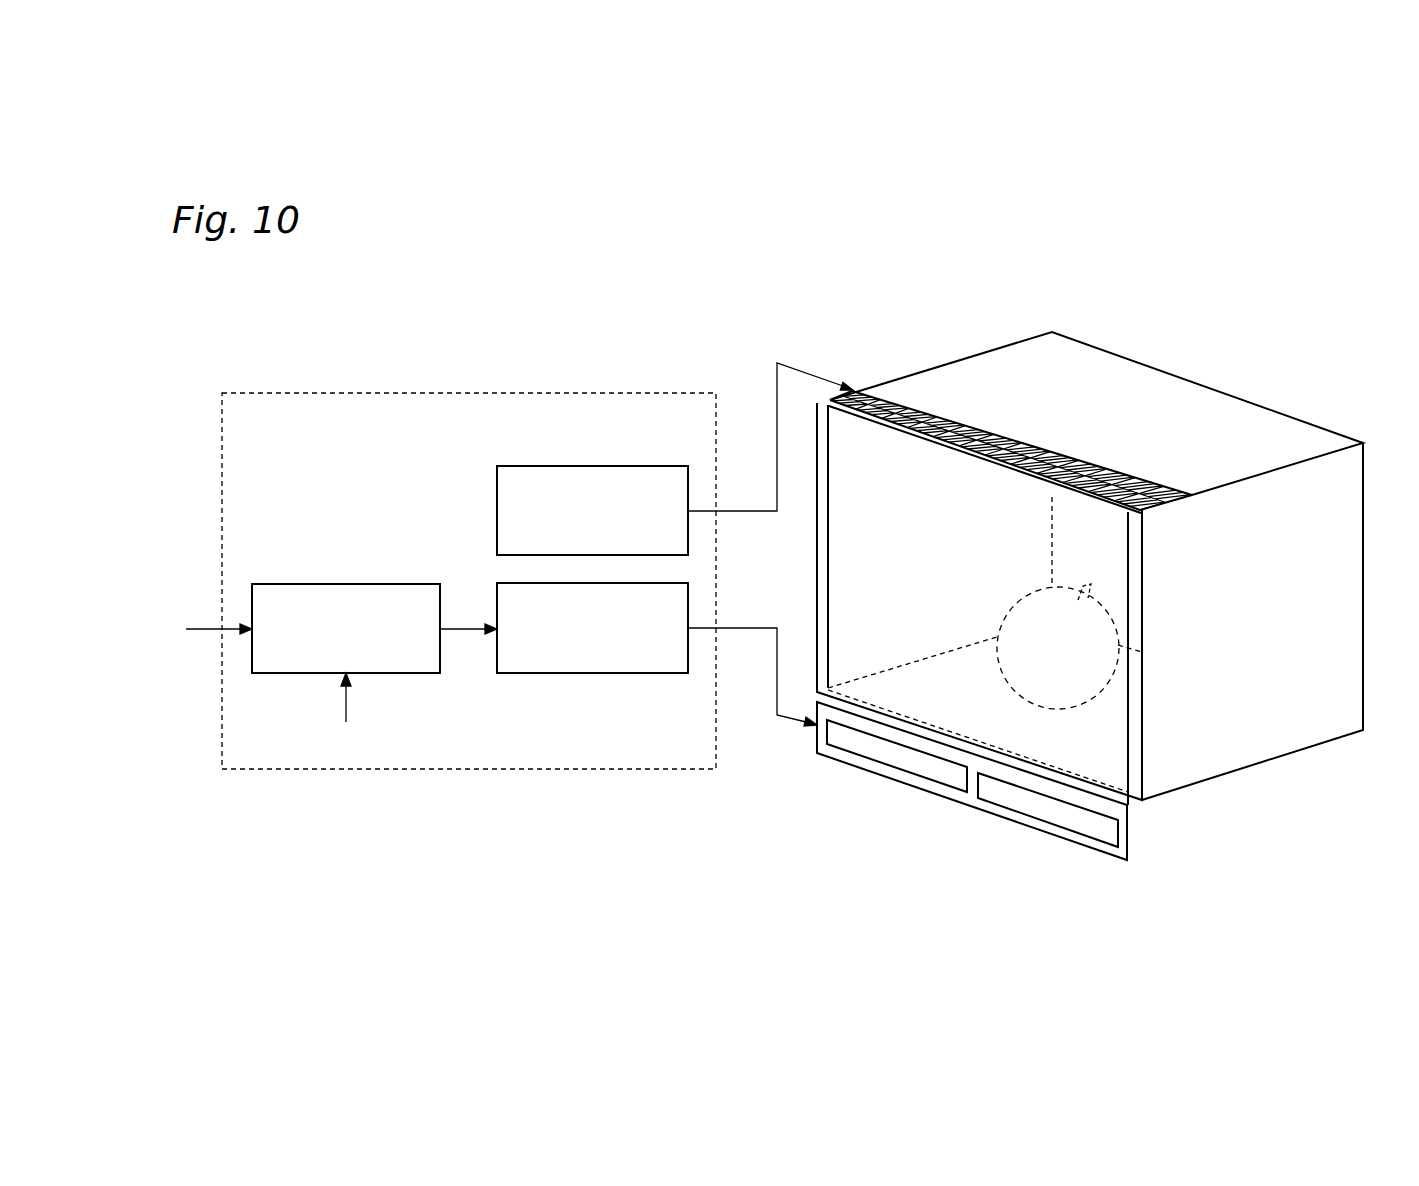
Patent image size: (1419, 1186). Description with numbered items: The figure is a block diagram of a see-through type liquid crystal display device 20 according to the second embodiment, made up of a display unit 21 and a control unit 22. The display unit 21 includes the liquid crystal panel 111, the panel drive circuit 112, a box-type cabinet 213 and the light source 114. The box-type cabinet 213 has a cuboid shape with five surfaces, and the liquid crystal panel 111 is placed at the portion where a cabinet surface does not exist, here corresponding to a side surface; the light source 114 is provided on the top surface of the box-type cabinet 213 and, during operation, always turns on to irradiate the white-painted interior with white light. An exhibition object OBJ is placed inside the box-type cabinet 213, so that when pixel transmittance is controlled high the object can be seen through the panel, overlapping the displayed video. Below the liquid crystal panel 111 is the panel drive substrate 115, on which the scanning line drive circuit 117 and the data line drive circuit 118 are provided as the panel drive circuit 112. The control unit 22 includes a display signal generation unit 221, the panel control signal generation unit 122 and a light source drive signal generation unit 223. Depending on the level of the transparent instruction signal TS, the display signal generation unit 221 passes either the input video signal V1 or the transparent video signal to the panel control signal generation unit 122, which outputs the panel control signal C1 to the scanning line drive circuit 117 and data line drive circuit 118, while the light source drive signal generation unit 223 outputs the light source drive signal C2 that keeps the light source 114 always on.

The display device 20 is at (675, 315).
The control unit 22 is at (446, 393).
The display signal generation unit 221 is at (345, 584).
The light source drive signal generation unit 223 is at (590, 466).
The panel control signal generation unit 122 is at (593, 673).
The display unit 21 is at (852, 865).
The liquid crystal panel 111 is at (906, 432).
The light source 114 is at (1020, 433).
The box-type cabinet 213 is at (1141, 388).
The panel drive substrate 115 is at (852, 768).
The panel drive circuit 112 is at (985, 878).
The scanning line drive circuit 117 is at (942, 787).
The data line drive circuit 118 is at (1020, 812).
The exhibition object OBJ is at (1085, 665).
The input video signal V1 is at (204, 632).
The transparent instruction signal TS is at (345, 715).
The panel control signal C1 is at (752, 677).
The light source drive signal C2 is at (770, 437).